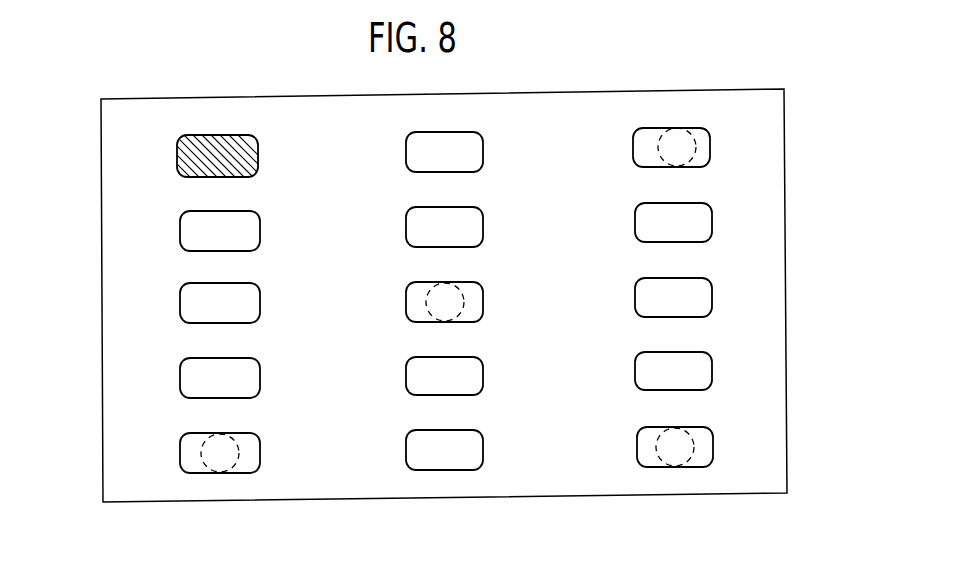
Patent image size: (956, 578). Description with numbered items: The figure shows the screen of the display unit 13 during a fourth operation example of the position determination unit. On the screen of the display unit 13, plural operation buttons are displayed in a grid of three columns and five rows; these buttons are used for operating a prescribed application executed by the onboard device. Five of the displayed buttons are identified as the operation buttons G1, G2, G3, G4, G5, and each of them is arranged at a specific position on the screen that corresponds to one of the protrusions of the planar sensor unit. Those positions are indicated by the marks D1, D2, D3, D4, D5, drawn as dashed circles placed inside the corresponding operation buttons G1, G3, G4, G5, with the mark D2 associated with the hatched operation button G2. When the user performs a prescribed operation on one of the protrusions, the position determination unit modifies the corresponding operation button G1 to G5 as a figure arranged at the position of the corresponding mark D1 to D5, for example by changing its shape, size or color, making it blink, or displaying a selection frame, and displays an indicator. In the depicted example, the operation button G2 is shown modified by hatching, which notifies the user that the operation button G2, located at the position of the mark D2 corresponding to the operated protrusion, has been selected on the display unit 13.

The display unit 13 is at (350, 500).
The operation button G1 is at (183, 436).
The operation button G2 is at (178, 152).
The operation button G3 is at (710, 154).
The operation button G4 is at (703, 432).
The operation button G5 is at (480, 287).
The mark D1 is at (188, 470).
The mark D2 is at (182, 178).
The mark D3 is at (696, 124).
The mark D4 is at (707, 465).
The mark D5 is at (407, 284).